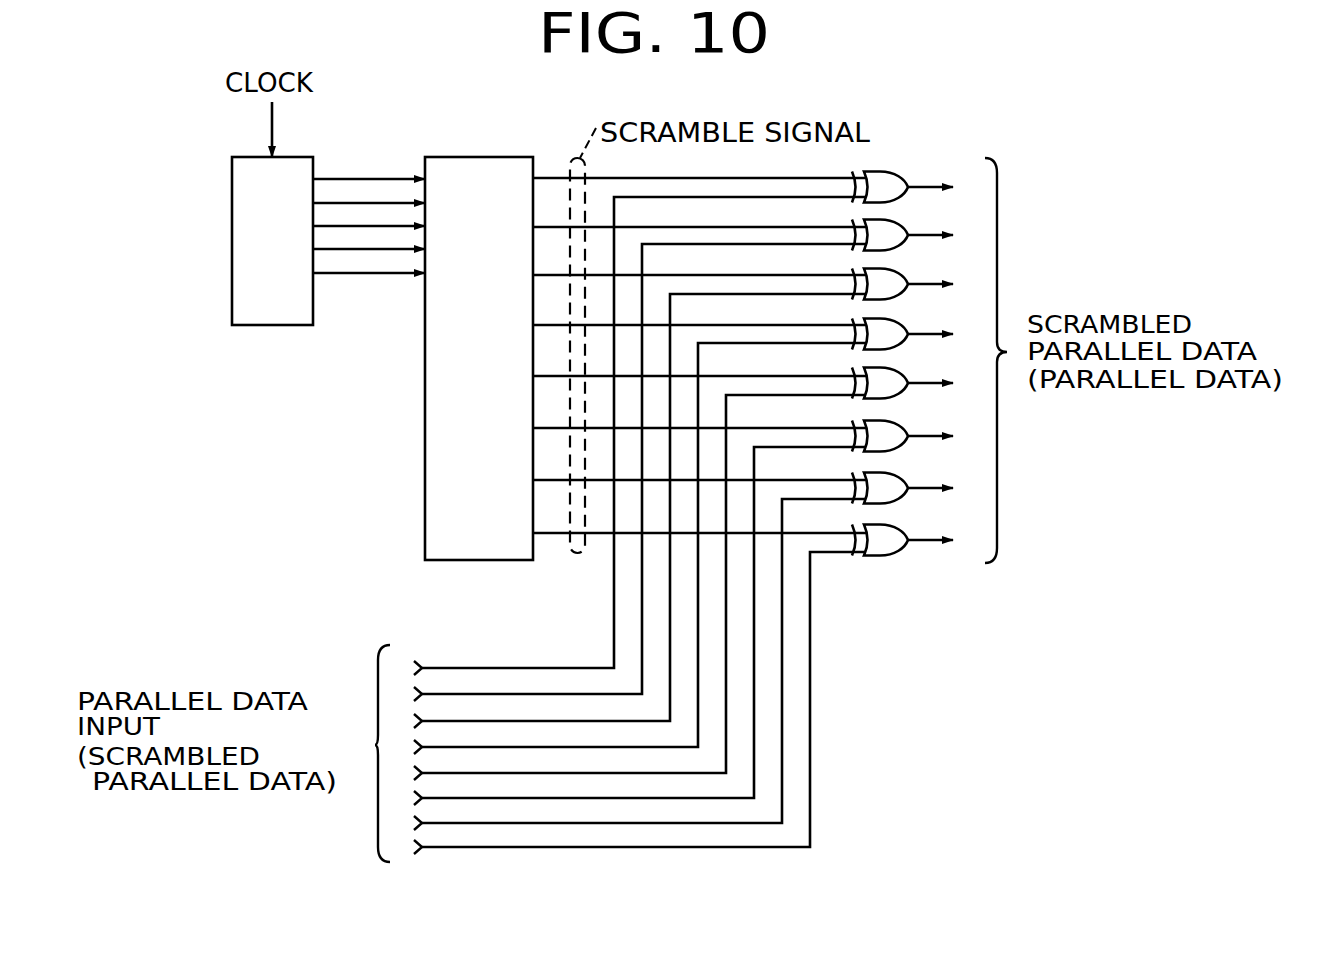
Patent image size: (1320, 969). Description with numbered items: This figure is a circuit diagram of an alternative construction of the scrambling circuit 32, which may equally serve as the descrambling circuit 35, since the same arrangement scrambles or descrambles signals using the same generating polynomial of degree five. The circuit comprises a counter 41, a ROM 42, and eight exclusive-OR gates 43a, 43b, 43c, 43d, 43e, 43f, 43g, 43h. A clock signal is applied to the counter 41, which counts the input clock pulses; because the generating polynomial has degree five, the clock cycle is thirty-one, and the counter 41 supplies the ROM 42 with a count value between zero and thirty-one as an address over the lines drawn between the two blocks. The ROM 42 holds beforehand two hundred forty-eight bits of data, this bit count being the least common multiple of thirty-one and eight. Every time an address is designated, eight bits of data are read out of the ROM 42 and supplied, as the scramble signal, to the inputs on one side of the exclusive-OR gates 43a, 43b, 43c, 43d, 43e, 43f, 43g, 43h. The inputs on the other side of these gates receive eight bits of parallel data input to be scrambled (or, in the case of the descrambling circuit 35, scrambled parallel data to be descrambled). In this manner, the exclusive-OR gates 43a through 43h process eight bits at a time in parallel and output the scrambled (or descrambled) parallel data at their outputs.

The counter 41 is at (270, 325).
The ROM 42 is at (477, 157).
The exclusive-OR gate 43a is at (904, 165).
The exclusive-OR gate 43b is at (907, 222).
The exclusive-OR gate 43c is at (907, 270).
The exclusive-OR gate 43d is at (907, 319).
The exclusive-OR gate 43e is at (907, 368).
The exclusive-OR gate 43f is at (908, 422).
The exclusive-OR gate 43g is at (909, 474).
The exclusive-OR gate 43h is at (911, 527).
The scrambling circuit 32 is at (882, 582).
The descrambling circuit 35 is at (911, 342).